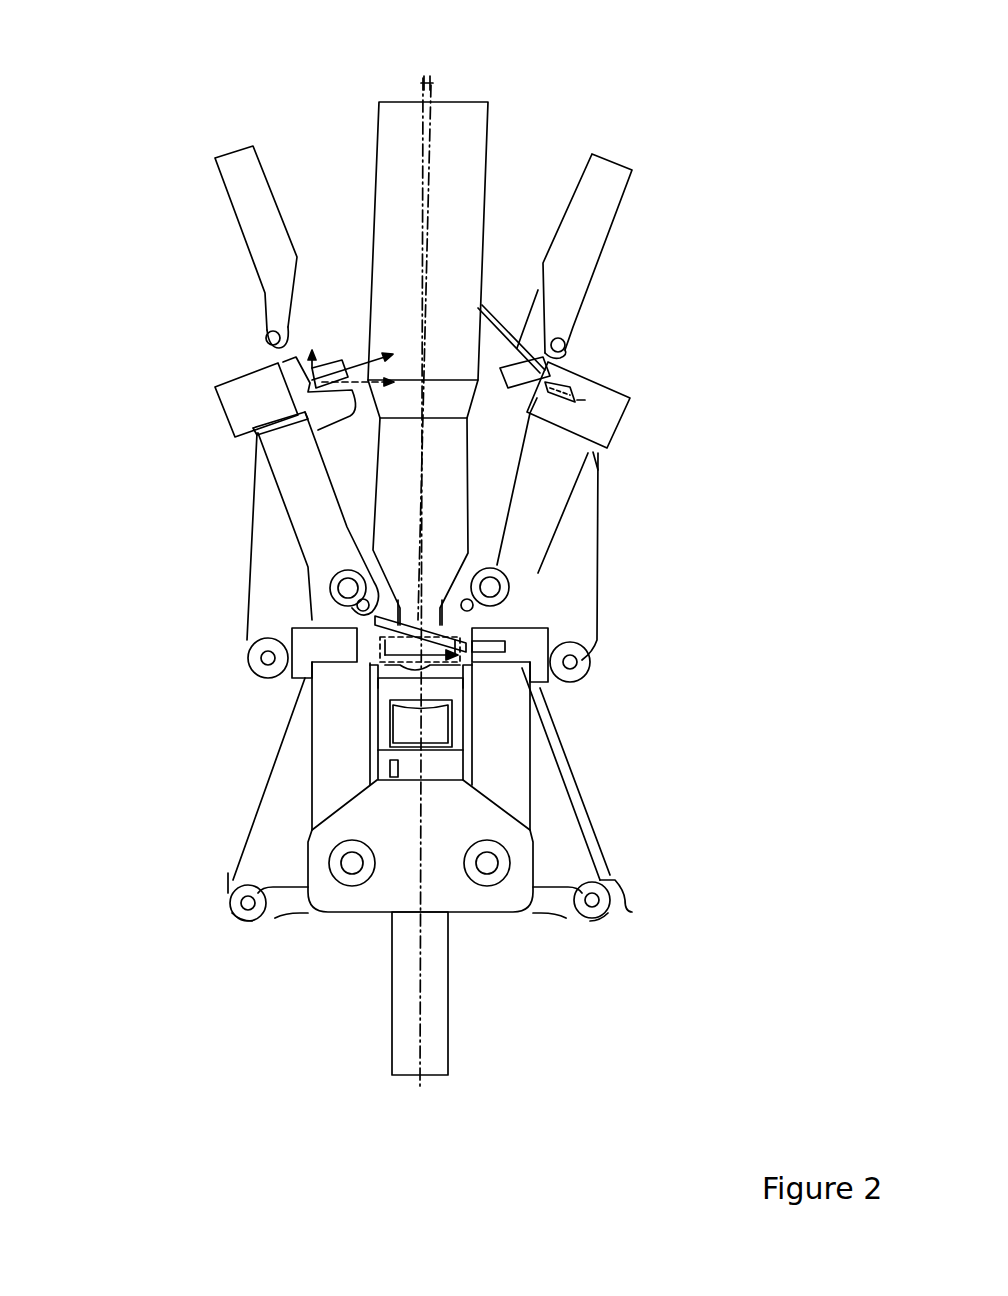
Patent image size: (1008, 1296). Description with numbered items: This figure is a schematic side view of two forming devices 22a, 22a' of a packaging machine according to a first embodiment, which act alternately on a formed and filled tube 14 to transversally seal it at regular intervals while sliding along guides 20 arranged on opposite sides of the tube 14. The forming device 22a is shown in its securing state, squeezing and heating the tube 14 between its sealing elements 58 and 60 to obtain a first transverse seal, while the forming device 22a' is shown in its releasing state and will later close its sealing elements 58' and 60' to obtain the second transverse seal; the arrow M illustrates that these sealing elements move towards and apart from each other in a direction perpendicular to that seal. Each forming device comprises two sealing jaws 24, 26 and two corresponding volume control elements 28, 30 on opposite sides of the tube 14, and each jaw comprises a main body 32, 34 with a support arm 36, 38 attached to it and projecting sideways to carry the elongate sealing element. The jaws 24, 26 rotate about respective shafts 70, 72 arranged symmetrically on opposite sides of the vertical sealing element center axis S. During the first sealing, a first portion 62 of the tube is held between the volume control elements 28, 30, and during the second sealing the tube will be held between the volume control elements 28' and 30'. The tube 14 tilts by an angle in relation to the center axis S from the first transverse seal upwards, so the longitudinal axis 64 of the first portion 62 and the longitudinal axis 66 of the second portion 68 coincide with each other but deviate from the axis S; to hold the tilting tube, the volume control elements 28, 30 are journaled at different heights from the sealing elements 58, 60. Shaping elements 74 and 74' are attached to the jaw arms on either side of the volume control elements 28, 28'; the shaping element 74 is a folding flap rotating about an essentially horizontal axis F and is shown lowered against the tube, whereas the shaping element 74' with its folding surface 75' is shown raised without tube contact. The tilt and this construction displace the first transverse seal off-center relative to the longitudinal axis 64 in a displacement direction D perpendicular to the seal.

The tube 14 is at (514, 98).
The guides 20 is at (437, 1000).
The forming device 22a is at (721, 542).
The forming device 22a' is at (700, 355).
The sealing jaw 24 is at (722, 822).
The sealing jaw 26 is at (146, 823).
The volume control element 28 is at (598, 536).
The volume control element 28' is at (637, 229).
The volume control element 30 is at (276, 555).
The volume control element 30' is at (205, 247).
The main body 32 is at (625, 912).
The main body 34 is at (303, 880).
The support arm 36 is at (550, 633).
The support arm 38 is at (385, 628).
The sealing element 58 is at (540, 730).
The sealing element 58' is at (649, 327).
The sealing element 60 is at (318, 757).
The sealing element 60' is at (255, 393).
The first portion of the tube 62 is at (378, 648).
The longitudinal axis 64 is at (345, 563).
The longitudinal axis 66 is at (433, 145).
The second portion of the tube 68 is at (405, 297).
The shaft 70 is at (533, 578).
The shaft 72 is at (348, 588).
The shaping element 74 is at (590, 604).
The shaping element 74' is at (635, 280).
The folding surface 75' is at (516, 276).
The sealing element center axis S is at (422, 183).
The arrow M is at (257, 448).
The axis F is at (470, 660).
The displacement direction D is at (400, 645).